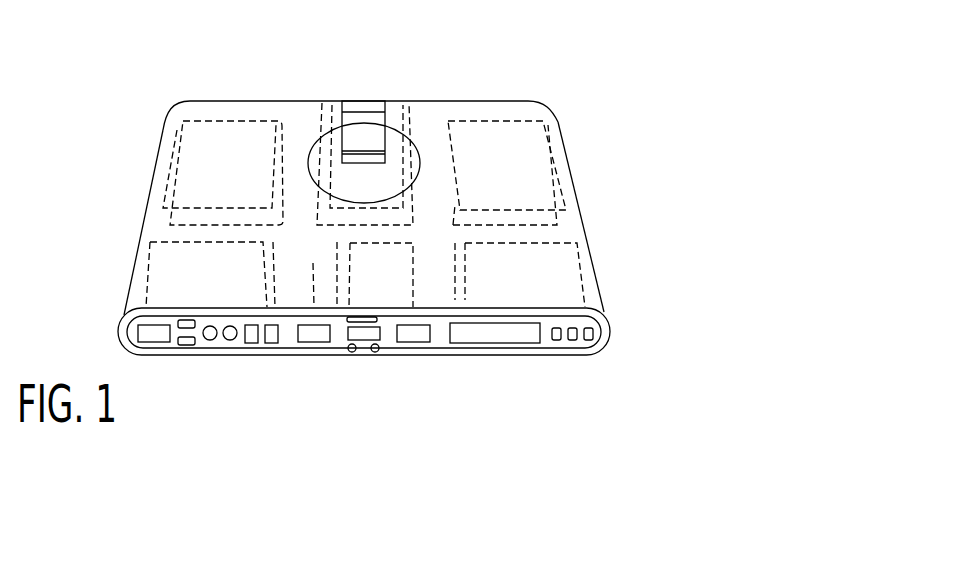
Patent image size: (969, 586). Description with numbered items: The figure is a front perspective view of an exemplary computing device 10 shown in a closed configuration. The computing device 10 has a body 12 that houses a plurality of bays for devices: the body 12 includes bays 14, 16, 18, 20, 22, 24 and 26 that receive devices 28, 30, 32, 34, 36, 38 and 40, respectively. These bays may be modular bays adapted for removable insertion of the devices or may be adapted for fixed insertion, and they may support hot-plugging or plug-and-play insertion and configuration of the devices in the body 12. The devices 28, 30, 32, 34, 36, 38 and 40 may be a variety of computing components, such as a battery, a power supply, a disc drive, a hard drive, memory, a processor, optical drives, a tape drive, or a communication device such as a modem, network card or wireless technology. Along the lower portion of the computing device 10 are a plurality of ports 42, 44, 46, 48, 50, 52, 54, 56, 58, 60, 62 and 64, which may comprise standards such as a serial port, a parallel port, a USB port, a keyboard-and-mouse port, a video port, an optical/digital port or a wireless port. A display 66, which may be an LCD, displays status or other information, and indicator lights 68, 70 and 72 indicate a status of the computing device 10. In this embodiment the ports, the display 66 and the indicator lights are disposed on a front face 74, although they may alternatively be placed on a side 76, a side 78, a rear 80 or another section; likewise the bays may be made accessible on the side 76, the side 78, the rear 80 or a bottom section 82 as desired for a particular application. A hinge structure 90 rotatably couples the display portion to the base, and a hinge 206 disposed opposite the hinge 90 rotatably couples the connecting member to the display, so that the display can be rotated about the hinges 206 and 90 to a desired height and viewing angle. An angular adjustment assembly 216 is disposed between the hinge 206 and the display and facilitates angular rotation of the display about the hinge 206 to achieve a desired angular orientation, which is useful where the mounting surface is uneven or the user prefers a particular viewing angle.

The computing device 10 is at (536, 445).
The body 12 is at (239, 100).
The bay 14 is at (165, 173).
The bay 16 is at (192, 263).
The bay 18 is at (151, 274).
The bay 20 is at (360, 112).
The bay 22 is at (566, 173).
The bay 24 is at (521, 264).
The bay 26 is at (576, 275).
The device 28 is at (200, 170).
The device 30 is at (320, 263).
The device 32 is at (168, 273).
The device 34 is at (344, 118).
The device 36 is at (538, 181).
The device 38 is at (398, 263).
The device 40 is at (537, 275).
The port 42 is at (150, 343).
The port 44 is at (188, 320).
The port 46 is at (187, 346).
The port 48 is at (210, 341).
The port 50 is at (230, 341).
The port 52 is at (252, 344).
The port 54 is at (272, 344).
The port 56 is at (312, 343).
The port 58 is at (349, 352).
The port 60 is at (377, 352).
The port 62 is at (365, 342).
The port 64 is at (416, 343).
The display 66 is at (470, 344).
The indicator light 68 is at (557, 341).
The indicator light 70 is at (574, 342).
The indicator light 72 is at (593, 338).
The front face 74 is at (441, 347).
The side 76 is at (162, 142).
The side 78 is at (568, 142).
The rear 80 is at (490, 101).
The bottom section 82 is at (525, 356).
The hinge structure 90 is at (356, 101).
The hinge 206 is at (373, 164).
The angular adjustment assembly 216 is at (405, 113).